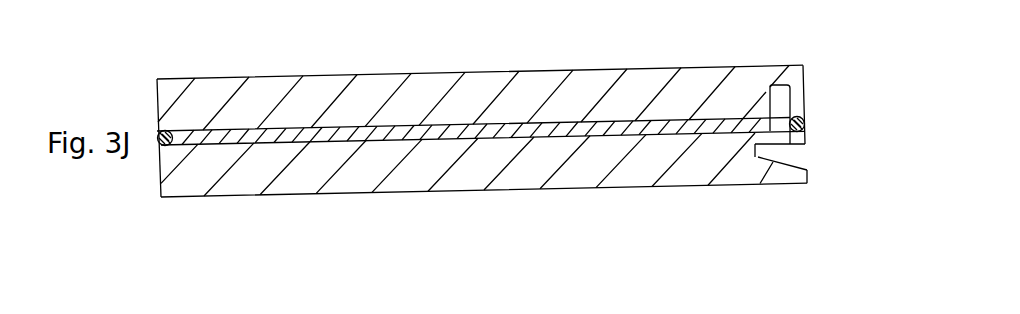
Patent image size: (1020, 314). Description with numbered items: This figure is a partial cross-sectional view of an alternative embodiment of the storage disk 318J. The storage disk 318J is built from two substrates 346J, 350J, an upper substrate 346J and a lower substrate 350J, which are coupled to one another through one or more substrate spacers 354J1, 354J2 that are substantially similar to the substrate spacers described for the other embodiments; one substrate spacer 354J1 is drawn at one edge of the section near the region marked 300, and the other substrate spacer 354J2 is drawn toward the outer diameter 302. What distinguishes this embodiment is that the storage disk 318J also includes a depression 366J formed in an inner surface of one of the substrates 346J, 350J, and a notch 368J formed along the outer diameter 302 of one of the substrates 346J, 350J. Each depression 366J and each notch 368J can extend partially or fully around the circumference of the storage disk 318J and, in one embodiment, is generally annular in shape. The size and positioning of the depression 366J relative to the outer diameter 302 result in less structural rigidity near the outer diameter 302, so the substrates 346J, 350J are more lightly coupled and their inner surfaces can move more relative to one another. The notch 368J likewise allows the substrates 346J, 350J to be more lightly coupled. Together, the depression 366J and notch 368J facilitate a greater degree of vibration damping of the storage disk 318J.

The storage disk 318J is at (320, 64).
The substrate 346J is at (588, 85).
The substrate 350J is at (577, 173).
The substrate spacer 354J1 is at (167, 148).
The substrate spacer 354J2 is at (808, 122).
The depression 366J is at (815, 45).
The notch 368J is at (783, 153).
The first end 300 is at (156, 163).
The outer diameter 302 is at (808, 102).